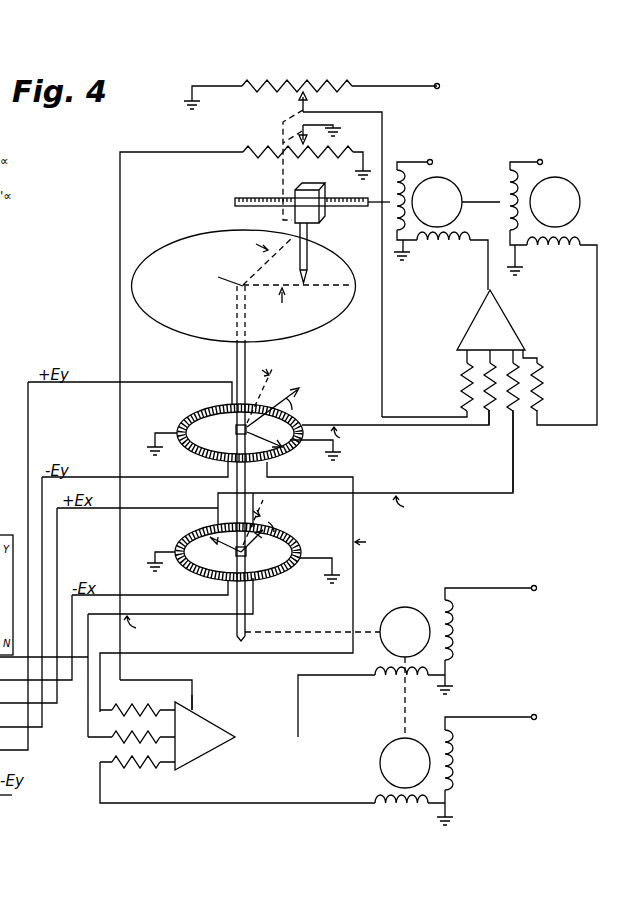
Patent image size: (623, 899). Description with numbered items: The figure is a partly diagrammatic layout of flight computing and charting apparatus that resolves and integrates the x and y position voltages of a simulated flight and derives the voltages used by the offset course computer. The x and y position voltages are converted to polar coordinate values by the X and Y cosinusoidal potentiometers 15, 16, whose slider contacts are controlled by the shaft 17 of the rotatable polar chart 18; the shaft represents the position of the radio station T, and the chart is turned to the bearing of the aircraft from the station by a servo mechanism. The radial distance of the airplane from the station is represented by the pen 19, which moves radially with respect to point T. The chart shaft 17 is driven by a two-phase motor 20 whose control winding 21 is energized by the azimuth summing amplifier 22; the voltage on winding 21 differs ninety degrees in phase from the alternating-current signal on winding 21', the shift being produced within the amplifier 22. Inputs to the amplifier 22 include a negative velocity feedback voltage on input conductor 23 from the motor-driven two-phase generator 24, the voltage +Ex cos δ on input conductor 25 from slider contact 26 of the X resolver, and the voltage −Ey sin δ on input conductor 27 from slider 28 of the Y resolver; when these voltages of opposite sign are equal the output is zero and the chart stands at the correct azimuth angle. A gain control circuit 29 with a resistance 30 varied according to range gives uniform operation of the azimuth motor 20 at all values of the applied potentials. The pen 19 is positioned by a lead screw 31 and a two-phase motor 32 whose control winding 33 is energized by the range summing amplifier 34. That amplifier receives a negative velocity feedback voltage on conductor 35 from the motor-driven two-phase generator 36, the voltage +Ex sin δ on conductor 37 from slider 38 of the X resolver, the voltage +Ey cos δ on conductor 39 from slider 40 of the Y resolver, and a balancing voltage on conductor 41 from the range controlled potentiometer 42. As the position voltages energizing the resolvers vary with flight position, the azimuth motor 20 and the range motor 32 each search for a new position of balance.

The X cosinusoidal potentiometer 15 is at (180, 536).
The Y cosinusoidal potentiometer 16 is at (184, 412).
The chart shaft 17 is at (233, 358).
The rotatable polar chart 18 is at (298, 336).
The pen 19 is at (310, 268).
The two-phase motor 20 is at (405, 607).
The control winding 21 is at (371, 702).
The winding 21' is at (510, 638).
The azimuth summing amplifier 22 is at (208, 753).
The input conductor 23 is at (164, 768).
The motor-driven two-phase generator 24 is at (380, 769).
The input conductor 25 is at (163, 732).
The slider contact 26 is at (268, 532).
The input conductor 27 is at (163, 705).
The slider 28 is at (300, 414).
The gain control circuit 29 is at (194, 698).
The resistance 30 is at (265, 140).
The lead screw 31 is at (244, 198).
The two-phase motor 32 is at (457, 186).
The control winding 33 is at (447, 250).
The range summing amplifier 34 is at (510, 326).
The conductor 35 is at (597, 428).
The motor-driven two-phase generator 36 is at (580, 206).
The conductor 37 is at (513, 470).
The slider 38 is at (208, 532).
The conductor 39 is at (489, 428).
The slider 40 is at (300, 391).
The conductor 41 is at (420, 415).
The range controlled potentiometer 42 is at (296, 78).